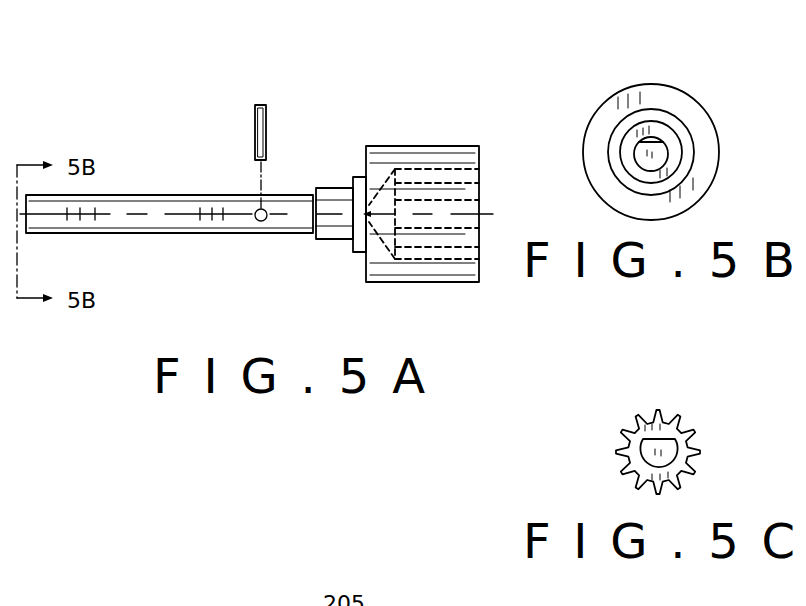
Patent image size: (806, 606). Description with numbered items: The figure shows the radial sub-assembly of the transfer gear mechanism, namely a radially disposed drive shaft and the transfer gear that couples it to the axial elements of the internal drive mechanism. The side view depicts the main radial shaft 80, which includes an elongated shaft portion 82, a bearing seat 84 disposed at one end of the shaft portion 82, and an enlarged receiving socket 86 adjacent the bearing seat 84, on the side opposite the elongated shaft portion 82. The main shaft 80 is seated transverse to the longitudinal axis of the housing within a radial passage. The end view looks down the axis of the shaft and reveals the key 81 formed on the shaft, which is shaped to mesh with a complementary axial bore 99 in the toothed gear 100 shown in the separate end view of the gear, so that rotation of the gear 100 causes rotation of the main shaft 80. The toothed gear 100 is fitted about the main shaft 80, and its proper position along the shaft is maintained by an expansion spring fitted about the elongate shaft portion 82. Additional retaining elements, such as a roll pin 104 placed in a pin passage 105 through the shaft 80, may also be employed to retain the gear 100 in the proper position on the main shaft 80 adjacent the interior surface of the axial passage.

In FIG. 5A, the main radial shaft 80 is at (118, 215).
In FIG. 5A, the key 81 is at (151, 195).
In FIG. 5A, the elongated shaft portion 82 is at (178, 233).
In FIG. 5B, the elongated shaft portion 82 is at (667, 158).
In FIG. 5A, the bearing seat 84 is at (327, 246).
In FIG. 5B, the bearing seat 84 is at (684, 126).
In FIG. 5A, the enlarged receiving socket 86 is at (407, 288).
In FIG. 5B, the enlarged receiving socket 86 is at (595, 102).
In FIG. 5C, the axial bore 99 is at (617, 456).
In FIG. 5C, the toothed gear 100 is at (708, 452).
In FIG. 5A, the roll pin 104 is at (280, 127).
In FIG. 5A, the pin passage 105 is at (266, 222).